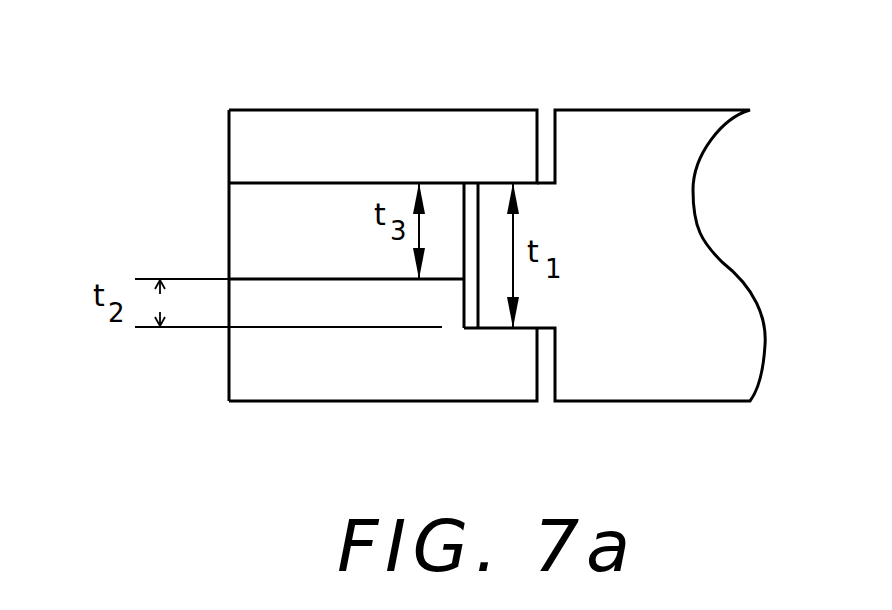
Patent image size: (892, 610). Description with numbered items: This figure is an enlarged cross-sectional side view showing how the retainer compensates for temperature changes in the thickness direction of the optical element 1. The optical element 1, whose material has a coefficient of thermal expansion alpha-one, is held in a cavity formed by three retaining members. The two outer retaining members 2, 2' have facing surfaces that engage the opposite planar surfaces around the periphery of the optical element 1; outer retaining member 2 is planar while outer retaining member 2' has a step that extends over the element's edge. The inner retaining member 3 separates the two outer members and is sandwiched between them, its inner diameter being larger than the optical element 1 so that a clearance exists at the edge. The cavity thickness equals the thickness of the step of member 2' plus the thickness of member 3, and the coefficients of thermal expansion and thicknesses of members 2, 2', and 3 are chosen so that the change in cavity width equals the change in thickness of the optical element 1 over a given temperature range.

The optical element 1 is at (708, 273).
The outer retaining member 2 is at (383, 106).
The outer retaining member 2' is at (336, 387).
The inner retaining member 3 is at (250, 237).